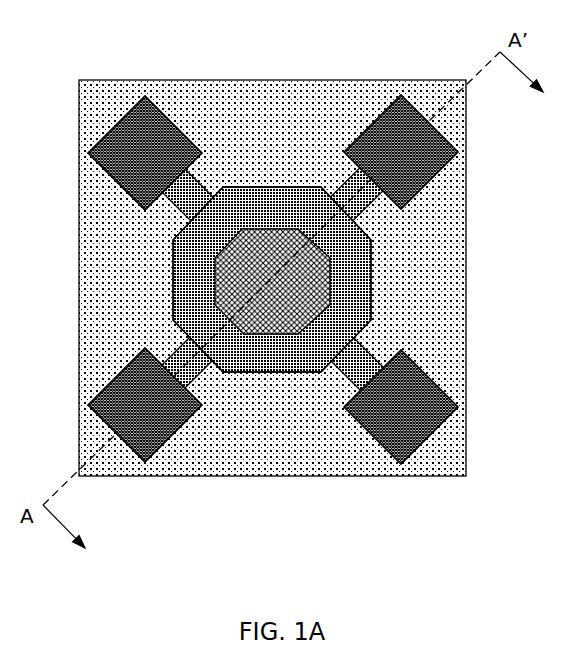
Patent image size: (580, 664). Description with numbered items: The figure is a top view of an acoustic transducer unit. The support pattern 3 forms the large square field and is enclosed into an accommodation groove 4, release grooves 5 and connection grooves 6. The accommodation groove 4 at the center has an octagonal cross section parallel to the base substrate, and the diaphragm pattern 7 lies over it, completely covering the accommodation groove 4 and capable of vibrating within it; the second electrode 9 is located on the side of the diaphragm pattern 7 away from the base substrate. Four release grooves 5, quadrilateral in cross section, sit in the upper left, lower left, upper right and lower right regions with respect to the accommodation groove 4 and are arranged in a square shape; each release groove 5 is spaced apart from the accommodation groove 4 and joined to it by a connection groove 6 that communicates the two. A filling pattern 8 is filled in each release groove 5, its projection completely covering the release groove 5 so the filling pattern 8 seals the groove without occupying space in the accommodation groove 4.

The support pattern 3 is at (121, 254).
The accommodation groove 4 is at (256, 209).
The release groove 5 is at (162, 146).
The connection groove 6 is at (199, 203).
The diaphragm pattern 7 is at (294, 186).
The filling pattern 8 is at (125, 113).
The second electrode 9 is at (229, 290).